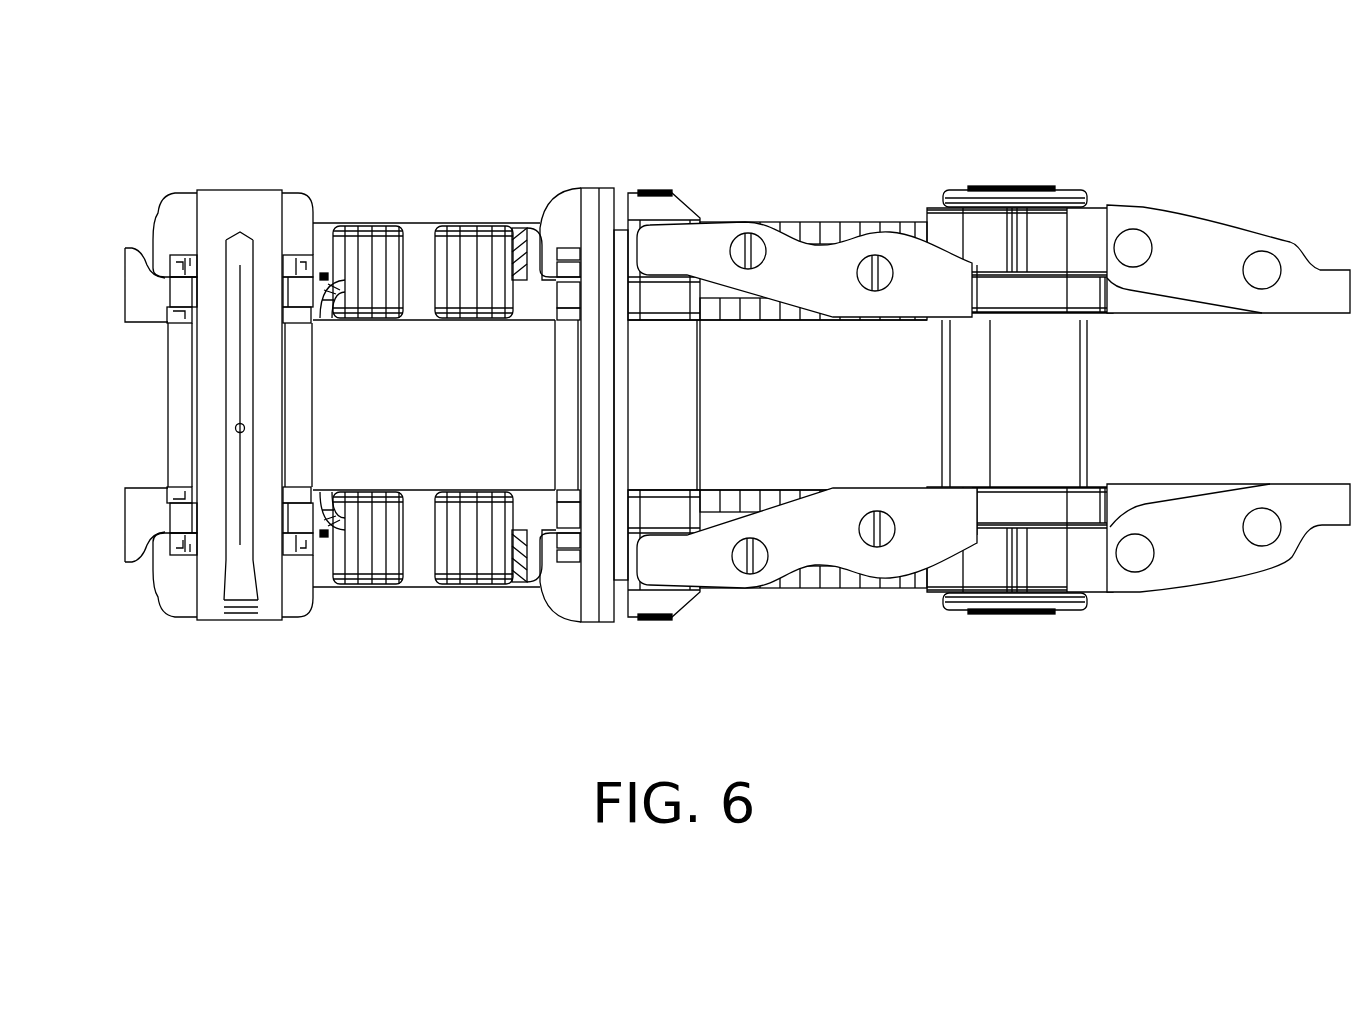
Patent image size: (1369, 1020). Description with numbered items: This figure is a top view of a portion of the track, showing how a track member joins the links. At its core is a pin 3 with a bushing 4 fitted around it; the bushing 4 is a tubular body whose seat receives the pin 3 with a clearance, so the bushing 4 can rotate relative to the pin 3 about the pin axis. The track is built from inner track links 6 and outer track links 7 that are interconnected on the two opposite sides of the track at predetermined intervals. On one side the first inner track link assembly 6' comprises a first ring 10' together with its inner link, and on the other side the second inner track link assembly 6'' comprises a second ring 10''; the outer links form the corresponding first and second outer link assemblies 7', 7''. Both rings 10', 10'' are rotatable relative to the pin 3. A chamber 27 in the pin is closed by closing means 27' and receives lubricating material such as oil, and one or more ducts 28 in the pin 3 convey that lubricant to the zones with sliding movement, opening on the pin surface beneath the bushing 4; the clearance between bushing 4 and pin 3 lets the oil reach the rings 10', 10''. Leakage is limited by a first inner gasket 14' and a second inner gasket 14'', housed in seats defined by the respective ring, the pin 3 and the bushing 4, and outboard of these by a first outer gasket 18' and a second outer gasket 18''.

The pin 3 is at (273, 400).
The bushing 4 is at (303, 350).
The inner track links 6 is at (884, 204).
The first inner track link assembly 6' is at (434, 293).
The second inner track link assembly 6'' is at (434, 511).
The outer track links 7 is at (869, 597).
The upper hub flange 7' is at (321, 207).
The lower hub flange 7'' is at (317, 605).
The first ring 10' is at (125, 286).
The second ring 10'' is at (128, 521).
The first inner gasket 14' is at (133, 348).
The second inner gasket 14'' is at (129, 454).
The first outer gasket 18' is at (134, 188).
The second outer gasket 18'' is at (147, 613).
The bolt 27 is at (255, 325).
The closing means 27' is at (247, 642).
The ducts 28 is at (245, 432).